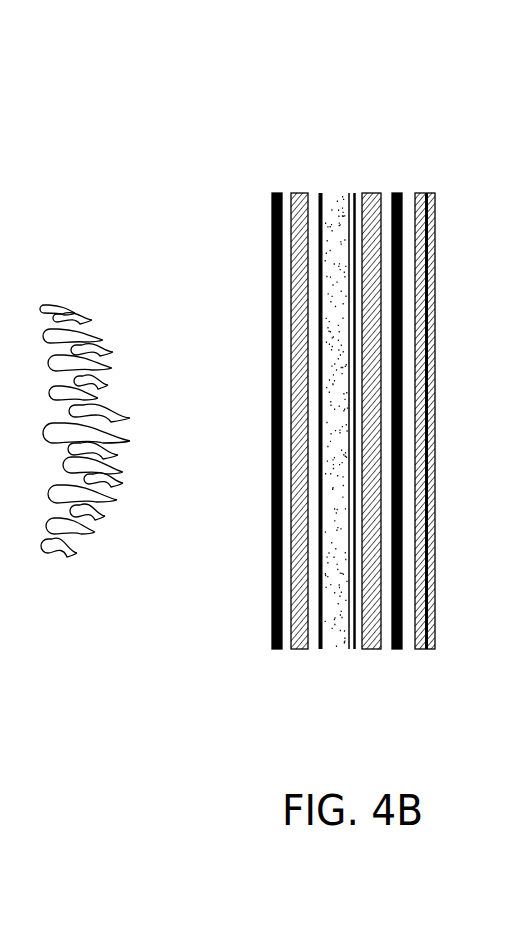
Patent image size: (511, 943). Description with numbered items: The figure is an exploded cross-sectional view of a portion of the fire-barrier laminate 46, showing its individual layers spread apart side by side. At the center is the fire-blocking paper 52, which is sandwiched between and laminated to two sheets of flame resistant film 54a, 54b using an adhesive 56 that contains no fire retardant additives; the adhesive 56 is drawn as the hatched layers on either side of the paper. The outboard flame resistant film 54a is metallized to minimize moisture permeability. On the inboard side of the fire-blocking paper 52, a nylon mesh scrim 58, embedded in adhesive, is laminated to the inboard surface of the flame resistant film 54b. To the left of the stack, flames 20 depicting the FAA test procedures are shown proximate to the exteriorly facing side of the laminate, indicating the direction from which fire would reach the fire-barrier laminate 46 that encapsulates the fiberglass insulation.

The flames 20 is at (83, 560).
The fire-barrier laminate 46 is at (337, 88).
The fire-blocking paper 52 is at (337, 203).
The flame resistant film 54a is at (276, 213).
The flame resistant film 54b is at (394, 200).
The adhesive 56 is at (370, 308).
The nylon mesh scrim 58 is at (427, 193).